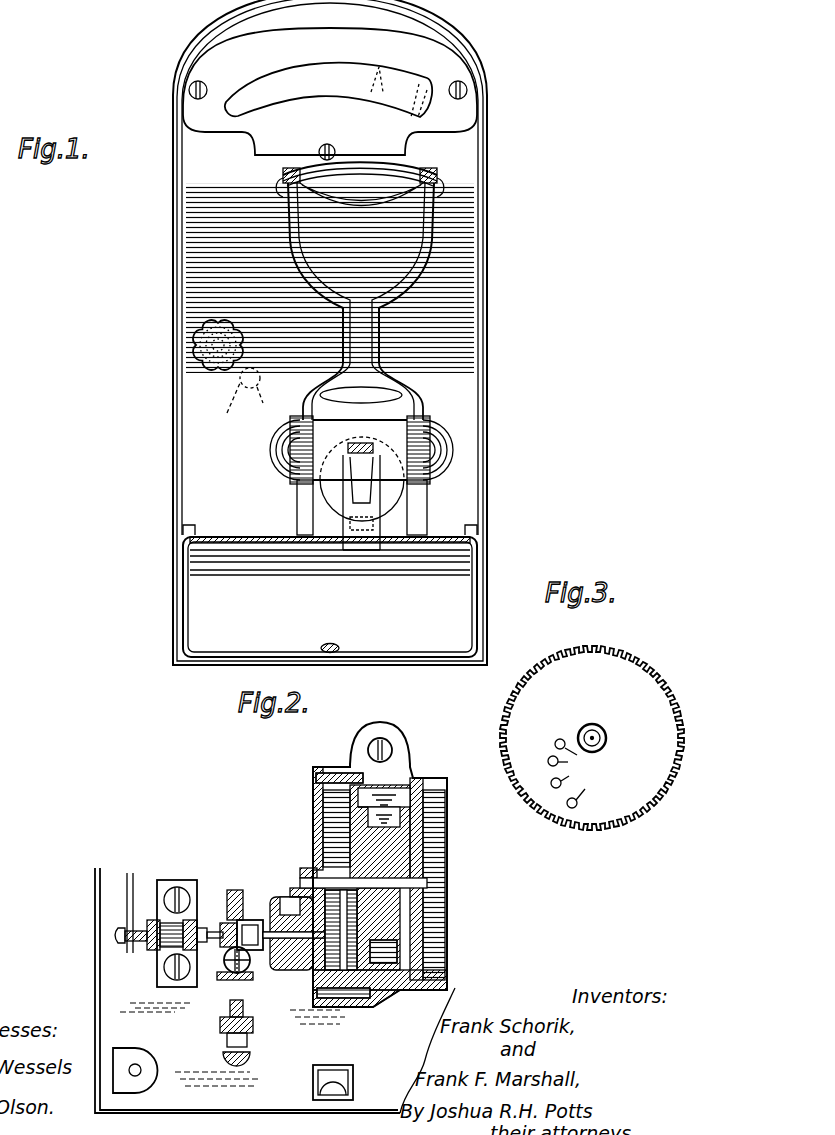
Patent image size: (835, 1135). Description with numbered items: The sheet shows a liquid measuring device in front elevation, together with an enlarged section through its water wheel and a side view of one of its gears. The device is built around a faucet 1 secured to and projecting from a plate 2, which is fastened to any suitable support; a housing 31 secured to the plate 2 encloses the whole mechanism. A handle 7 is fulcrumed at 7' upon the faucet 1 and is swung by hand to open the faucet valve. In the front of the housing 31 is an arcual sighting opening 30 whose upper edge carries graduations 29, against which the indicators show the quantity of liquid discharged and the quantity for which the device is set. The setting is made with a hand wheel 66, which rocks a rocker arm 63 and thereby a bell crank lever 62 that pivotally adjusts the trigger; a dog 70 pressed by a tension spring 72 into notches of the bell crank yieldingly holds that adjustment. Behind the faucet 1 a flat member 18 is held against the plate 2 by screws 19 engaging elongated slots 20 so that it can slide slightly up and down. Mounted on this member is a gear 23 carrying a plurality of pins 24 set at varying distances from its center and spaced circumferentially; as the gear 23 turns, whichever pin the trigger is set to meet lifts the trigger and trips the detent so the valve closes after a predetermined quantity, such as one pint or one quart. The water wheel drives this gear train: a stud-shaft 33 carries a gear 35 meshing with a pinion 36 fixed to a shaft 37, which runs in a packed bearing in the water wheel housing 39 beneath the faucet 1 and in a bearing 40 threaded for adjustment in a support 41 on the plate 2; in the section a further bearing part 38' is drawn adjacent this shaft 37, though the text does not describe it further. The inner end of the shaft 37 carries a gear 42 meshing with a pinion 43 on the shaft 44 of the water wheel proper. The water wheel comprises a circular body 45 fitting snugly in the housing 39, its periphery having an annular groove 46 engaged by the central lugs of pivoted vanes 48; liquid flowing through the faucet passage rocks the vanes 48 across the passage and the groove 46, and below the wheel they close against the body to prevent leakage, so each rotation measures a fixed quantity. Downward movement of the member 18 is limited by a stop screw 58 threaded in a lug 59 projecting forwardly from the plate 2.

In FIG. 1, the faucet 1 is at (360, 528).
In FIG. 2, the plate 2 is at (105, 905).
In FIG. 1, the handle 7 is at (394, 291).
In FIG. 1, the fulcrum 7' is at (393, 450).
In FIG. 2, the flat member or plate 18 is at (248, 962).
In FIG. 2, the screws 19 is at (240, 973).
In FIG. 2, the elongated slots 20 is at (236, 919).
In FIG. 3, the gear 23 is at (650, 798).
In FIG. 3, the pins 24 is at (569, 773).
In FIG. 1, the graduations 29 is at (262, 86).
In FIG. 1, the arcual sighting opening 30 is at (314, 90).
In FIG. 1, the housing 31 is at (452, 167).
In FIG. 2, the stud-shaft 33 is at (260, 918).
In FIG. 2, the gear 35 is at (236, 890).
In FIG. 2, the pinion 36 is at (213, 950).
In FIG. 2, the shaft 37 is at (292, 967).
In FIG. 2, the base plate 38' is at (235, 987).
In FIG. 2, the water wheel housing 39 is at (313, 790).
In FIG. 2, the bearing 40 is at (187, 987).
In FIG. 2, the support 41 is at (168, 920).
In FIG. 2, the gear 42 is at (340, 1000).
In FIG. 2, the pinion 43 is at (338, 870).
In FIG. 2, the shaft of the water wheel 44 is at (423, 877).
In FIG. 2, the circular body 45 is at (397, 833).
In FIG. 2, the annular groove 46 is at (393, 813).
In FIG. 2, the vanes 48 is at (395, 803).
In FIG. 2, the stop screw 58 is at (251, 1058).
In FIG. 2, the lug 59 is at (254, 1025).
In FIG. 1, the bell crank lever 62 is at (255, 393).
In FIG. 1, the rocker arm 63 is at (222, 407).
In FIG. 1, the hand wheel 66 is at (203, 367).
In FIG. 2, the dog 70 is at (131, 920).
In FIG. 2, the tension spring 72 is at (121, 945).